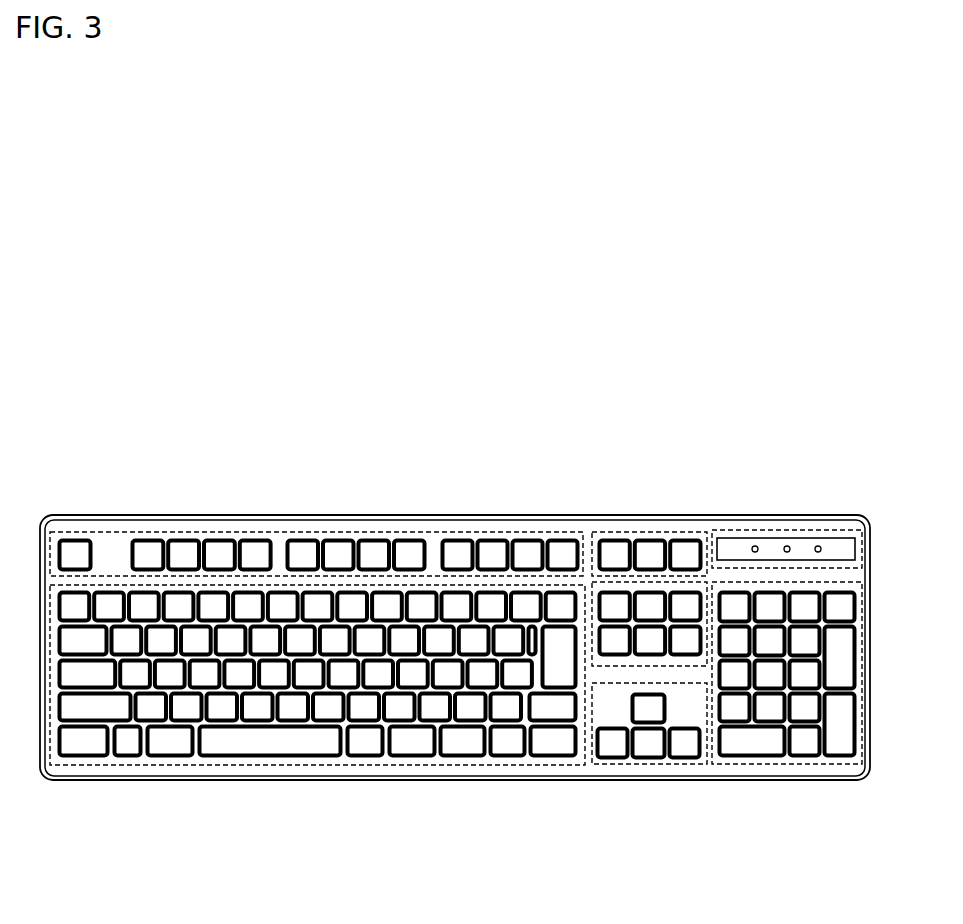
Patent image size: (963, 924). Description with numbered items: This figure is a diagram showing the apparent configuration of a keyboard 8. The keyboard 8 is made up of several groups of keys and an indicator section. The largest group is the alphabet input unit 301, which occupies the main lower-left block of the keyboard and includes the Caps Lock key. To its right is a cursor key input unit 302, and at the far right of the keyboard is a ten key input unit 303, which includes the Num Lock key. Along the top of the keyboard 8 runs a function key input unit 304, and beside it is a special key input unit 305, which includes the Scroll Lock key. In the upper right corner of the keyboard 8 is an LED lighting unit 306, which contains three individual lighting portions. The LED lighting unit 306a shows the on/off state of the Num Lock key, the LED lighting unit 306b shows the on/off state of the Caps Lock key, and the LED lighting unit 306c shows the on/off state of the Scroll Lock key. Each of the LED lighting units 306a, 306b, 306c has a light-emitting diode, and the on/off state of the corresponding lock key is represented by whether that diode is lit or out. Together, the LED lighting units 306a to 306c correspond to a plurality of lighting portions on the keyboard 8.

The keyboard 8 is at (184, 515).
The alphabet input unit 301 is at (113, 765).
The cursor key input unit 302 is at (647, 765).
The ten key input unit 303 is at (805, 765).
The function key input unit 304 is at (341, 532).
The special key input unit 305 is at (615, 532).
The LED lighting unit 306 is at (858, 526).
The LED lighting unit 306a is at (752, 546).
The LED lighting unit 306b is at (787, 546).
The LED lighting unit 306c is at (818, 546).